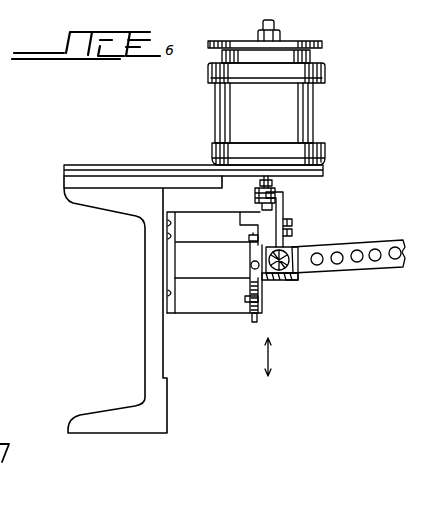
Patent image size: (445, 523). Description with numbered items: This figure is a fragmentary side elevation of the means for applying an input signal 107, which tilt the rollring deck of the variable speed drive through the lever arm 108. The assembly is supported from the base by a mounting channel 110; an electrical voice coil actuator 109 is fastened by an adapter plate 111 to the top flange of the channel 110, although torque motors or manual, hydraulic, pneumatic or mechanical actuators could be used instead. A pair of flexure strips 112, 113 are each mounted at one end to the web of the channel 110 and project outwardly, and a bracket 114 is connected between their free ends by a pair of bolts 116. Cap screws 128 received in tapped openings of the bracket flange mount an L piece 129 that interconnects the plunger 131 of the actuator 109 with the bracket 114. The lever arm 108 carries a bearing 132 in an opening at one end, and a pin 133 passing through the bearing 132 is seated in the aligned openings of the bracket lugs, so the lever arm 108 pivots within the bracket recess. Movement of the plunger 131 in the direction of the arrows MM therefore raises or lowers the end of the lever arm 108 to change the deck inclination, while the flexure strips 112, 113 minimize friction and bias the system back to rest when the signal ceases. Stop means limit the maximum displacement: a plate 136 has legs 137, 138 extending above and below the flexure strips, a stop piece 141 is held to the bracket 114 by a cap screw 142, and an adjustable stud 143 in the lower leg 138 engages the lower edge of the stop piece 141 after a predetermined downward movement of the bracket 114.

The means for applying an input signal 107 is at (359, 343).
The lever arm 108 is at (378, 247).
The electrical voice coil actuator 109 is at (317, 98).
The mounting channel 110 is at (124, 402).
The adapter plate 111 is at (189, 164).
The flexure strip 112 is at (213, 242).
The flexure strip 113 is at (225, 280).
The bracket 114 is at (298, 282).
The bolts 116 is at (256, 236).
The cap screws 128 is at (293, 222).
The L piece 129 is at (285, 203).
The plunger 131 is at (273, 181).
The bearing 132 is at (285, 255).
The pin 133 is at (281, 281).
The plate 136 is at (233, 303).
The leg 137 is at (253, 209).
The leg 138 is at (251, 314).
The stop piece 141 is at (250, 275).
The cap screw 142 is at (250, 262).
The adjustable stud 143 is at (266, 342).